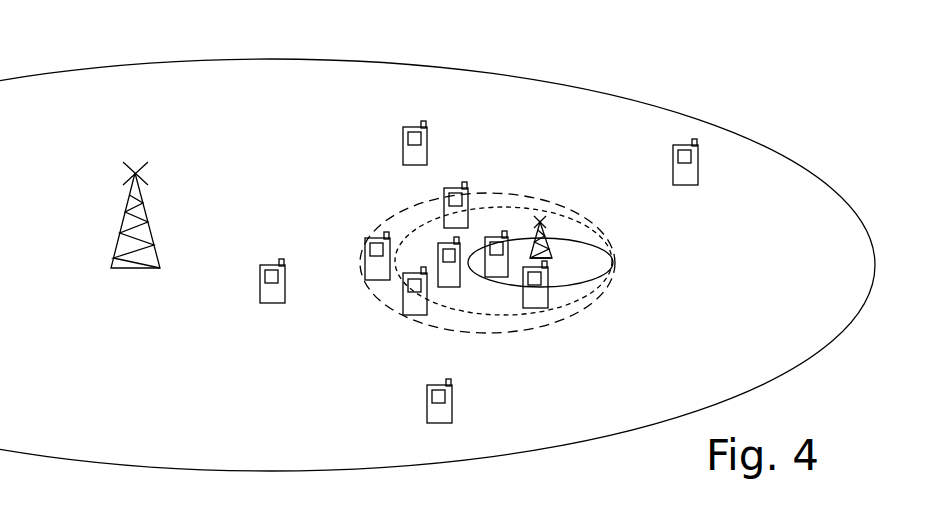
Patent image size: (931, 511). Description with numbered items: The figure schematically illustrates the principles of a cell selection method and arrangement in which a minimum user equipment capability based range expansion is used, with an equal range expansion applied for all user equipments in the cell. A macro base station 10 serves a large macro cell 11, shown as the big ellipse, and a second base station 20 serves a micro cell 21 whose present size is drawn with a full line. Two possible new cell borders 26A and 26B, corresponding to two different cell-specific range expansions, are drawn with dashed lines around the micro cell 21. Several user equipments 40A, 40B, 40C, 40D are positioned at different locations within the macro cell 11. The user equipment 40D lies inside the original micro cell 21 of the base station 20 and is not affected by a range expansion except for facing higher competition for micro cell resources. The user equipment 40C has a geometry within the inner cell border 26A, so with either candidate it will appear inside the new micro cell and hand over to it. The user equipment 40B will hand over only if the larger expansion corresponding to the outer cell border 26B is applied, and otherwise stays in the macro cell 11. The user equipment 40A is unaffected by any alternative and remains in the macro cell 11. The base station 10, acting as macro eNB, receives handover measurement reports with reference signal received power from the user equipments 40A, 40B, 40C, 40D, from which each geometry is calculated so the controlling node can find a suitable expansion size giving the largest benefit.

The base station 10 is at (143, 263).
The macro cell 11 is at (557, 98).
The base station 20 is at (540, 222).
The micro cell 21 is at (592, 268).
The cell border 26A is at (505, 313).
The cell border 26B is at (428, 325).
The user equipment 40A is at (403, 150).
The user equipment 40B is at (365, 240).
The user equipment 40C is at (455, 188).
The user equipment 40D is at (494, 237).